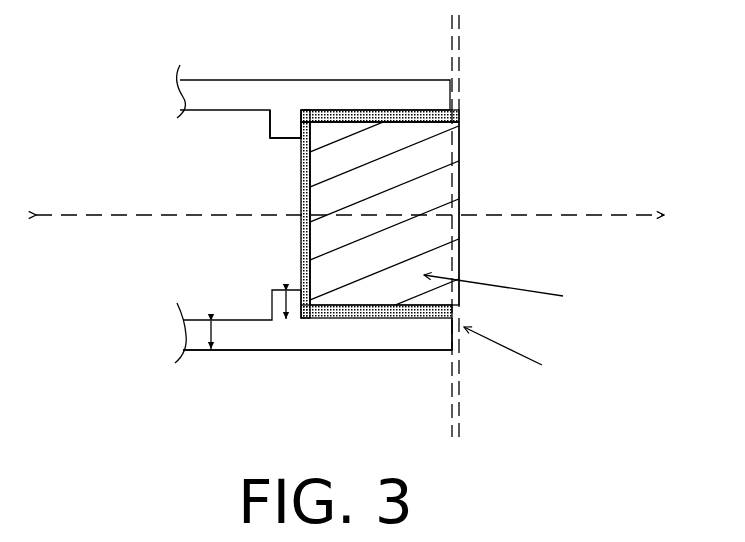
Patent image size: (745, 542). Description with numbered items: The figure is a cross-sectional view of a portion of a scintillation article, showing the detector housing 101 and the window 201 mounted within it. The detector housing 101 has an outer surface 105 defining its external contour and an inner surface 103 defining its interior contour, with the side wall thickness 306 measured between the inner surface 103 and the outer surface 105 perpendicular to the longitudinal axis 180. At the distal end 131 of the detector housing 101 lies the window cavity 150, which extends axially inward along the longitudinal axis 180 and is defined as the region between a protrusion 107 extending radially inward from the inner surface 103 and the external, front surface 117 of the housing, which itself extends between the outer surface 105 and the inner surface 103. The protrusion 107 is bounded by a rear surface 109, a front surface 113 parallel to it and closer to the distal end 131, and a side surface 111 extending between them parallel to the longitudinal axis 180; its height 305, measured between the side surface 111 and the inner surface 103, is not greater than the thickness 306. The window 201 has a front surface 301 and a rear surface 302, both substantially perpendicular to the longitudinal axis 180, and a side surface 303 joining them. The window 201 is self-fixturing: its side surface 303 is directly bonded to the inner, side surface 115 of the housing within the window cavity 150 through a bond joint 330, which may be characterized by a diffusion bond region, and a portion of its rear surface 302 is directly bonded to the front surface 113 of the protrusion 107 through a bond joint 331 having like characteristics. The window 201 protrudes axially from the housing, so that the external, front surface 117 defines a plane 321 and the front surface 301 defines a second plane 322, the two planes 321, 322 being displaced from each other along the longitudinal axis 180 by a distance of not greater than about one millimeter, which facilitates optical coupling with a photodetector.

The detector housing 101 is at (281, 76).
The inner surface 103 is at (259, 332).
The outer surface 105 is at (259, 376).
The protrusion 107 is at (333, 76).
The rear surface 109 is at (209, 128).
The side surface 111 is at (224, 161).
The front surface 113 is at (349, 102).
The inner, side surface 115 is at (376, 351).
The external, front surface 117 is at (517, 62).
The distal end 131 is at (522, 353).
The window cavity 150 is at (519, 290).
The longitudinal axis 180 is at (364, 237).
The window 201 is at (427, 243).
The front surface 301 is at (525, 208).
The rear surface 302 is at (248, 213).
The side surface 303 is at (420, 146).
The height 305 is at (243, 301).
The side wall thickness 306 is at (266, 351).
The plane 321 is at (395, 275).
The second plane 322 is at (513, 377).
The bond joint 330 is at (434, 115).
The bond joint 331 is at (259, 220).